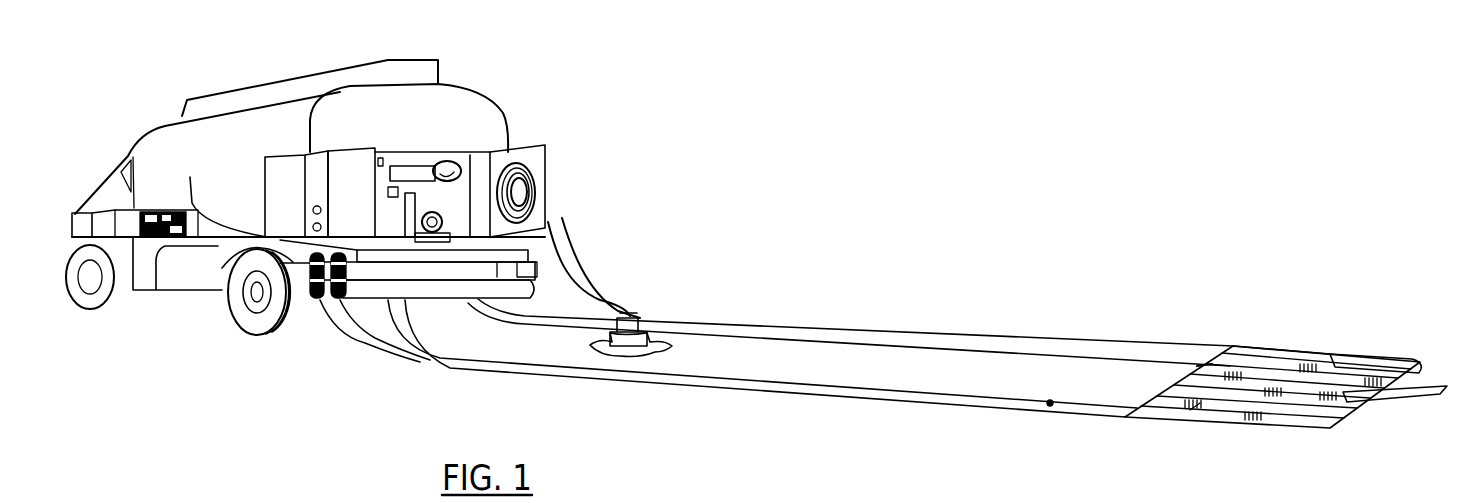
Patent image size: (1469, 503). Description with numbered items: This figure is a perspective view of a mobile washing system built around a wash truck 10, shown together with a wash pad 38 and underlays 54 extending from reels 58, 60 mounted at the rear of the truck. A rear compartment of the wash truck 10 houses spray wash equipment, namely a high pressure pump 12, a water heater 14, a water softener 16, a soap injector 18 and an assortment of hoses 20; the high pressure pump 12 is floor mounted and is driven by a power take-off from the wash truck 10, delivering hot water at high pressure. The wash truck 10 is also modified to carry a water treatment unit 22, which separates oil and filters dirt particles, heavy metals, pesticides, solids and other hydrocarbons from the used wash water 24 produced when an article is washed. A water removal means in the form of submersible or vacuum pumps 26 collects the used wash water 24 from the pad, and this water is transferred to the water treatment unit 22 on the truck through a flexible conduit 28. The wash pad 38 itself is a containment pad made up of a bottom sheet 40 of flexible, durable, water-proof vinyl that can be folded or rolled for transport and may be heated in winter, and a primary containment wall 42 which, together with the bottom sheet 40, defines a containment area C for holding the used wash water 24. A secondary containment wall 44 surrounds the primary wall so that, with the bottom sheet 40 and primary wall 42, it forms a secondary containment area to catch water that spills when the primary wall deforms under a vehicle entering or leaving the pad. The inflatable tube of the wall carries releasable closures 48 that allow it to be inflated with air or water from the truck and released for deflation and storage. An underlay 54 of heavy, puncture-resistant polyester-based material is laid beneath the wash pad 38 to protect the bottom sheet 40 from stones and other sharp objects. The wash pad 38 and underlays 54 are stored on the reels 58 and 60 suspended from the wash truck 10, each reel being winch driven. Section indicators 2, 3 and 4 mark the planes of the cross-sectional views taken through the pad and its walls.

The wash truck 10 is at (530, 109).
The high pressure pump 12 is at (443, 220).
The water heater 14 is at (380, 158).
The water softener 16 is at (387, 210).
The soap injector 18 is at (447, 161).
The hoses 20 is at (545, 192).
The water treatment unit 22 is at (160, 210).
The used wash water 24 is at (660, 340).
The submersible pumps 26 is at (637, 316).
The flexible conduit 28 is at (578, 293).
The wash pad 38 is at (862, 308).
The bottom sheet 40 is at (397, 327).
The primary containment wall 42 is at (791, 320).
The secondary containment wall 44 is at (1322, 404).
The releasable closures 48 is at (1050, 402).
The underlay 54 is at (371, 340).
The reel 58 is at (338, 300).
The reel 60 is at (316, 300).
The containment area C is at (1193, 410).
The section line 2- 2 is at (810, 365).
The section line 3- 3 is at (1215, 357).
The section line 4- 4 is at (1390, 340).